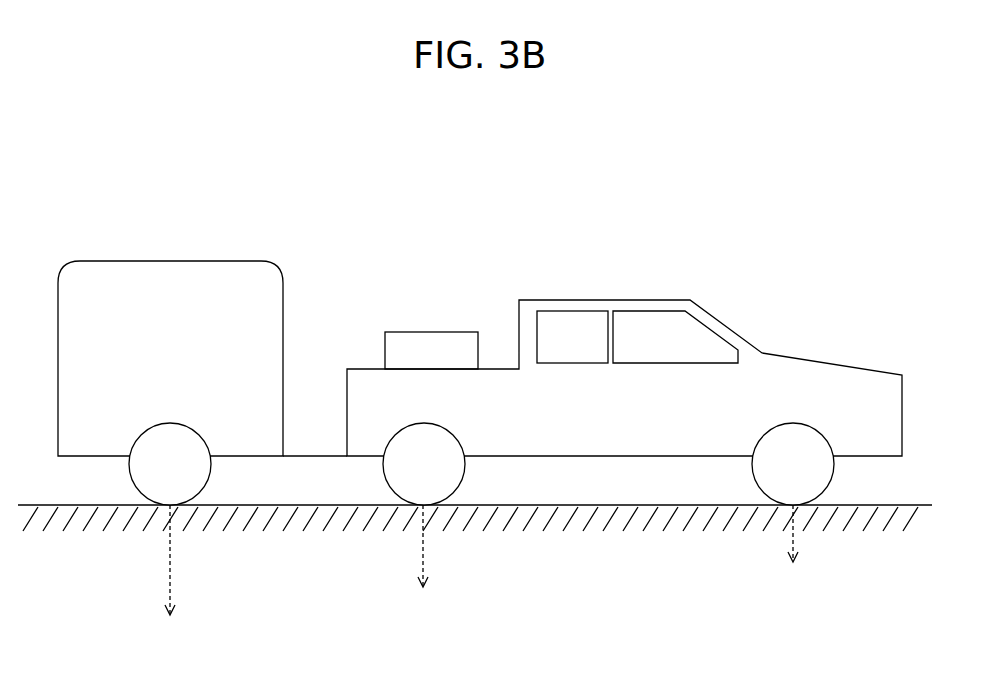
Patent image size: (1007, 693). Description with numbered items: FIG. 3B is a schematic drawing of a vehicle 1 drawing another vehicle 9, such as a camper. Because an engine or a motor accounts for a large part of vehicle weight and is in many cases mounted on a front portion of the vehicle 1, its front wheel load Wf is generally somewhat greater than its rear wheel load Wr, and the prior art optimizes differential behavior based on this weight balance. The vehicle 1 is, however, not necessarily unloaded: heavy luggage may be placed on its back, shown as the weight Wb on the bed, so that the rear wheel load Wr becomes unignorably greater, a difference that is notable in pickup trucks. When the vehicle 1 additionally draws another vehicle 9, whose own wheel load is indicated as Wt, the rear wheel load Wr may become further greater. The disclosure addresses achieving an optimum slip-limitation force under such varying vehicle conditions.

The another vehicle 9 is at (286, 187).
The vehicle 1 is at (788, 293).
The weight Wb is at (431, 350).
The trailer wheel load Wt is at (171, 577).
The rear wheel load Wr is at (428, 562).
The front wheel load Wf is at (794, 550).